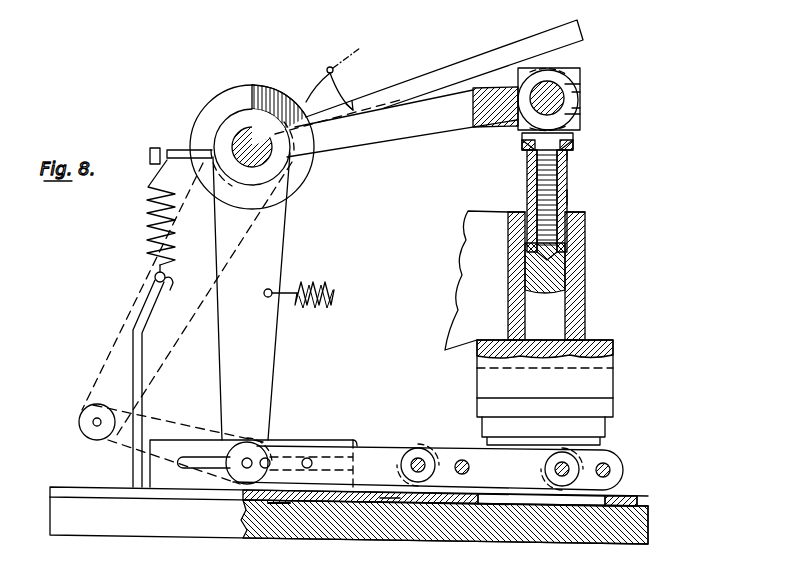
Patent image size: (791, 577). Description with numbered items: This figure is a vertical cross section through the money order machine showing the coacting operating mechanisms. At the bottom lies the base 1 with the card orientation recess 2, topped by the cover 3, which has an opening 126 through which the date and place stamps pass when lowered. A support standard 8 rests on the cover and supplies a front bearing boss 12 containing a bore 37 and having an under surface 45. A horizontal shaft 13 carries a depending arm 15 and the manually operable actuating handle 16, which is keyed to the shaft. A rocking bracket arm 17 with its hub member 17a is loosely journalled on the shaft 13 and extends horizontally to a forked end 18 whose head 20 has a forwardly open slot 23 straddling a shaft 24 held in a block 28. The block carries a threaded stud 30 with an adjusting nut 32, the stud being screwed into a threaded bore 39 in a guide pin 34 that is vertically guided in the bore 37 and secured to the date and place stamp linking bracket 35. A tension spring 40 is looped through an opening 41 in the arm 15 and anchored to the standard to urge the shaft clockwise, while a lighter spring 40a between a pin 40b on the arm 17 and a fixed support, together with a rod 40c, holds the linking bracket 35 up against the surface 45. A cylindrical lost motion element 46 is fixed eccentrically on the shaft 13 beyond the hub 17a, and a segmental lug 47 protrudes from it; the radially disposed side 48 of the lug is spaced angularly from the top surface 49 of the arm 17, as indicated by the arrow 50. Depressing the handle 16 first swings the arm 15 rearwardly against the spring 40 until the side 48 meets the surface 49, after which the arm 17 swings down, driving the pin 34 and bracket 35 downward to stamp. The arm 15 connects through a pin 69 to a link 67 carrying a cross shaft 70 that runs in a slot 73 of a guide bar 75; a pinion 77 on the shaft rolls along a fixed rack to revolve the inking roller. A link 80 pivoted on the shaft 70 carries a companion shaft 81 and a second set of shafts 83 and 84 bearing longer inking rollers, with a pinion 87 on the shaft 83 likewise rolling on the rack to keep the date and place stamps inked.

The base 1 is at (63, 527).
The money order card orientation slot 2 is at (662, 514).
The cover 3 is at (70, 488).
The support standard 8 is at (462, 275).
The front bearing boss 12 is at (585, 297).
The shaft 13 is at (268, 160).
The depending arm 15 is at (290, 220).
The actuating handle 16 is at (452, 66).
The rocking bracket arm 17 is at (410, 137).
The hub member 17a is at (230, 127).
The forked end 18 is at (517, 66).
The head 20 is at (562, 72).
The forwardly open slot 23 is at (582, 112).
The shaft 24 is at (577, 93).
The block 28 is at (582, 70).
The threaded stud 30 is at (553, 178).
The adjusting nut 32 is at (522, 140).
The guide pin 34 is at (568, 197).
The date and place stamp linking bracket 35 is at (613, 352).
The bore 37 is at (568, 270).
The threaded bore 39 is at (572, 158).
The tension spring 40 is at (315, 282).
The lighter spring 40a is at (148, 228).
The pin 40b is at (172, 152).
The rod 40c is at (135, 343).
The opening 41 is at (272, 300).
The under surface of boss 45 is at (582, 332).
The lost motion element 46 is at (208, 84).
The segmental lug 47 is at (272, 66).
The radially disposed side 48 is at (310, 102).
The top surface of bracket arm 49 is at (360, 113).
The arrow 50 is at (346, 71).
The link 67 is at (160, 420).
The pin 69 is at (87, 413).
The cross shaft 70 is at (418, 458).
The slot 73 is at (310, 457).
The guide bar 75 is at (340, 445).
The pinion 77 is at (390, 503).
The link 80 is at (463, 445).
The companion shaft 81 is at (463, 478).
The shaft 83 is at (554, 470).
The shaft 84 is at (612, 470).
The pinion 87 is at (606, 453).
The opening 126 is at (540, 498).